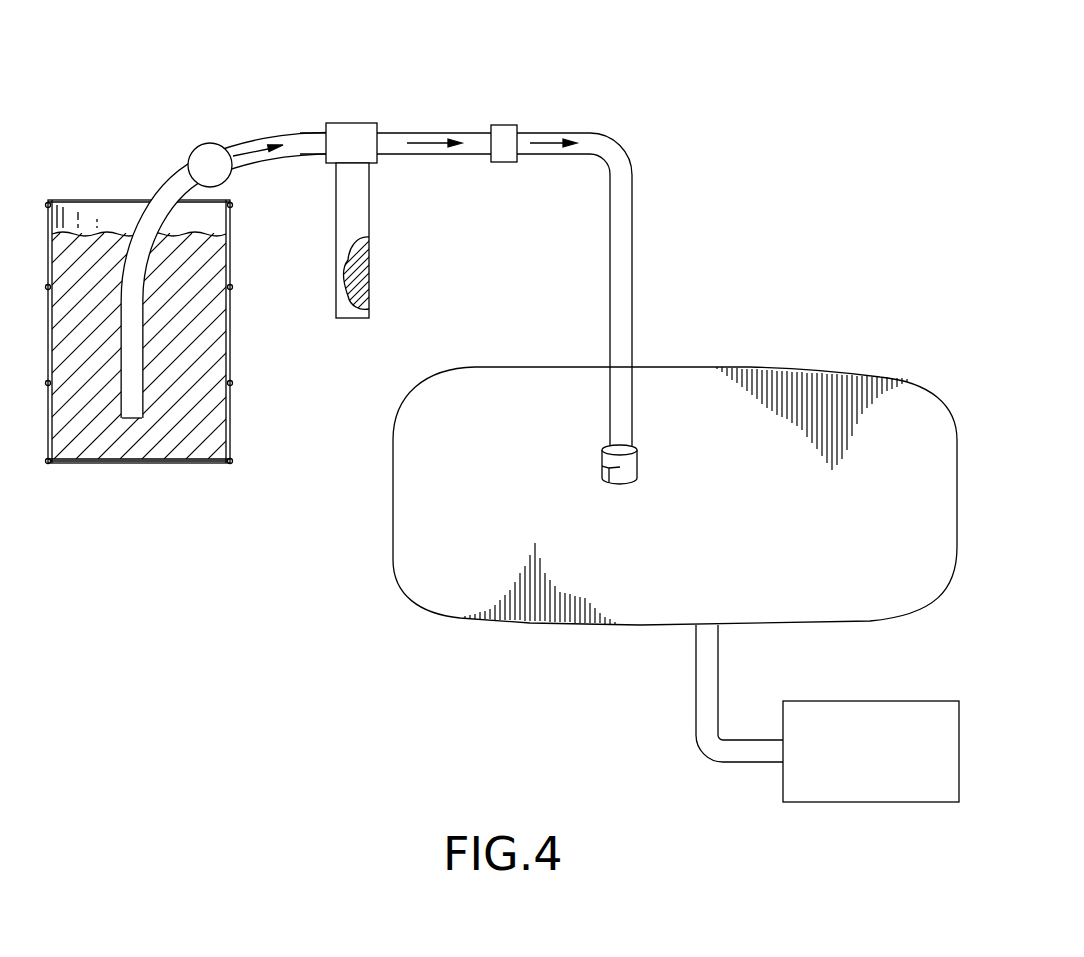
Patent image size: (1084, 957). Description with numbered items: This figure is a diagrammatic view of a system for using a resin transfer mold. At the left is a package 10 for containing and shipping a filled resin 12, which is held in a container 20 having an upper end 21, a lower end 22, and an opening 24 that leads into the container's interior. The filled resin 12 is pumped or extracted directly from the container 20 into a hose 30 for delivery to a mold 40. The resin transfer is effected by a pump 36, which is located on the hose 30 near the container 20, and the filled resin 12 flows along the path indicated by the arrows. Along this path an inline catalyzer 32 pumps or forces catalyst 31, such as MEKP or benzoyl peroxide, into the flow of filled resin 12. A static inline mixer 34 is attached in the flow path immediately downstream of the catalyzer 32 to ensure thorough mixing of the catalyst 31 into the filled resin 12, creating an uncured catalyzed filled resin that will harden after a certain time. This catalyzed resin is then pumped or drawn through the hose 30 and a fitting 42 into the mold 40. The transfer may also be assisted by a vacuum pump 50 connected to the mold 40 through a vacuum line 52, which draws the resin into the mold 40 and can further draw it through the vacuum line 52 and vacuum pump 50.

The package 10 is at (87, 118).
The filled resin 12 is at (205, 413).
The container 20 is at (232, 337).
The upper end 21 is at (104, 200).
The lower end 22 is at (148, 465).
The opening 24 is at (210, 216).
The hose 30 is at (301, 133).
The catalyst 31 is at (358, 283).
The inline catalyzer 32 is at (369, 197).
The static inline mixer 34 is at (395, 133).
The pump 36 is at (200, 146).
The mold 40 is at (761, 367).
The fitting 42 is at (639, 462).
The vacuum pump 50 is at (885, 768).
The vacuum line 52 is at (696, 672).